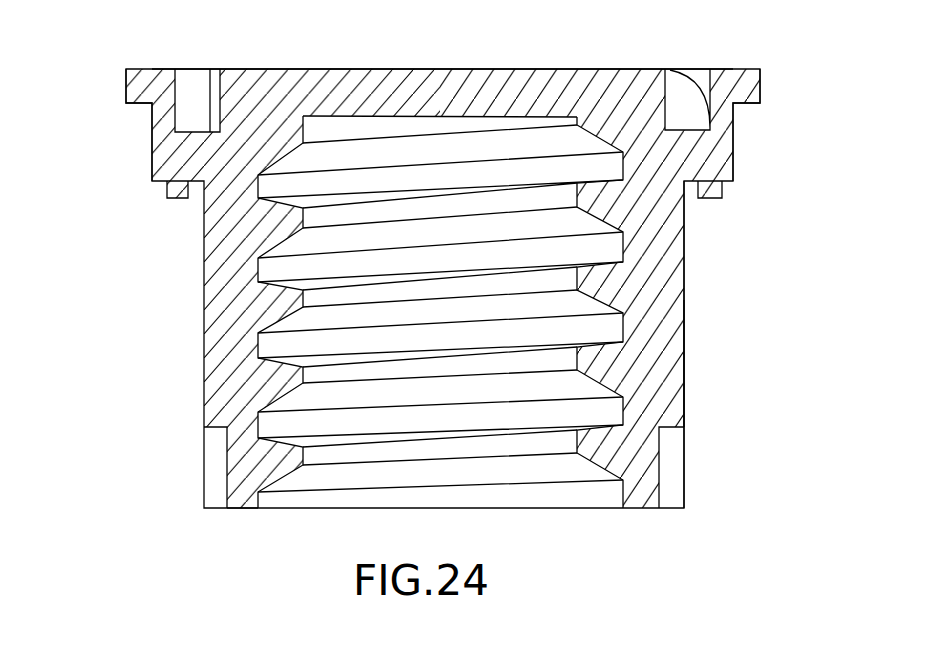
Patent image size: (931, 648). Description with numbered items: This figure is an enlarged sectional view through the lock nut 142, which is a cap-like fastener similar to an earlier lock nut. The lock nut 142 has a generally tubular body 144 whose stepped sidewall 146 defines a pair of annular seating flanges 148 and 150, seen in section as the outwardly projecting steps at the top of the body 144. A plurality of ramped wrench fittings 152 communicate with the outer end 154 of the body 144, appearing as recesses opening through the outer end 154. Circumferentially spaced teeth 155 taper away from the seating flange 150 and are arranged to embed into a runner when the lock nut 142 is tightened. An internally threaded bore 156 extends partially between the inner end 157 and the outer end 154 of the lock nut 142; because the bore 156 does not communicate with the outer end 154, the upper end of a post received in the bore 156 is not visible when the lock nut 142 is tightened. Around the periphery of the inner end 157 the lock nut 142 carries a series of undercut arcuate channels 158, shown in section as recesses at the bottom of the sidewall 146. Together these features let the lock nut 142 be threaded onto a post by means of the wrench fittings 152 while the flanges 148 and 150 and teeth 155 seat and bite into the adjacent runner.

The lock nut 142 is at (183, 340).
The tubular body 144 is at (684, 352).
The stepped sidewall 146 is at (684, 318).
The annular seating flange 148 is at (137, 103).
The annular seating flange 150 is at (733, 183).
The ramped wrench fittings 152 is at (177, 85).
The outer end 154 is at (602, 70).
The circumferentially spaced teeth 155 is at (167, 190).
The internally threaded bore 156 is at (598, 498).
The inner end 157 is at (243, 509).
The undercut arcuate channels 158 is at (223, 457).